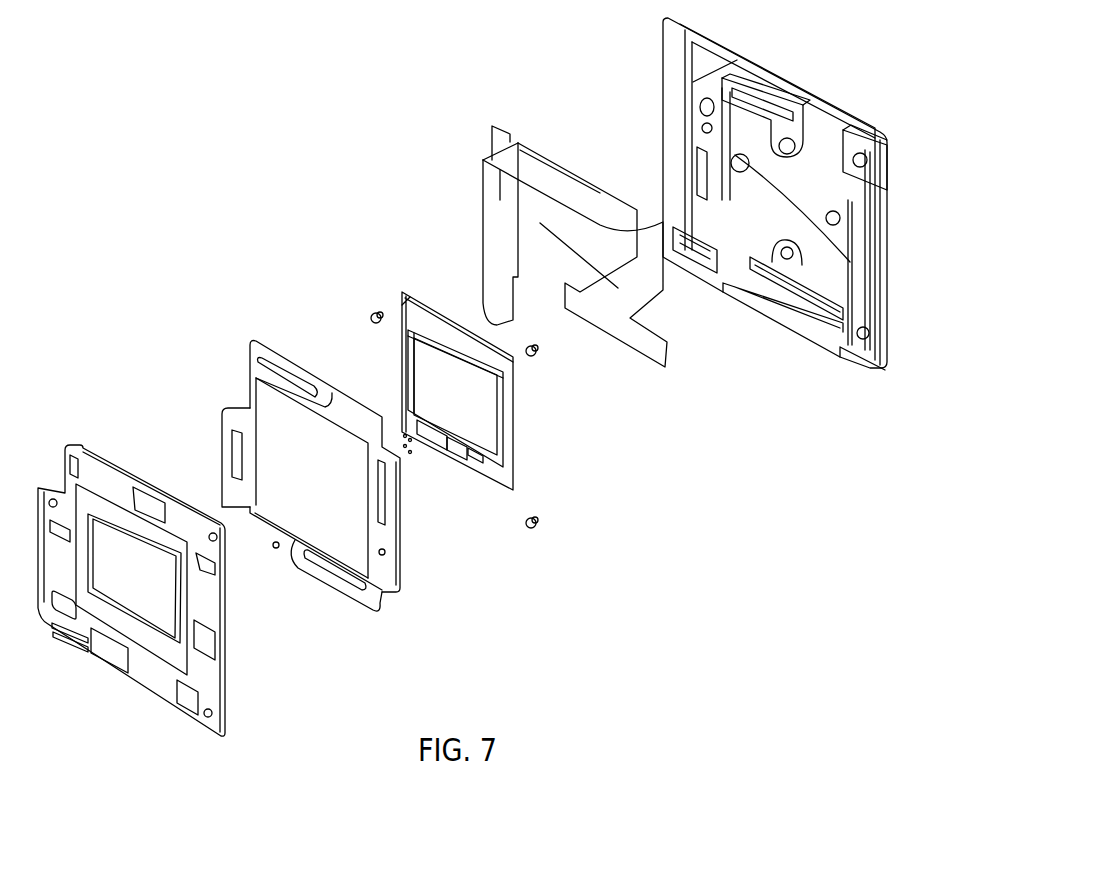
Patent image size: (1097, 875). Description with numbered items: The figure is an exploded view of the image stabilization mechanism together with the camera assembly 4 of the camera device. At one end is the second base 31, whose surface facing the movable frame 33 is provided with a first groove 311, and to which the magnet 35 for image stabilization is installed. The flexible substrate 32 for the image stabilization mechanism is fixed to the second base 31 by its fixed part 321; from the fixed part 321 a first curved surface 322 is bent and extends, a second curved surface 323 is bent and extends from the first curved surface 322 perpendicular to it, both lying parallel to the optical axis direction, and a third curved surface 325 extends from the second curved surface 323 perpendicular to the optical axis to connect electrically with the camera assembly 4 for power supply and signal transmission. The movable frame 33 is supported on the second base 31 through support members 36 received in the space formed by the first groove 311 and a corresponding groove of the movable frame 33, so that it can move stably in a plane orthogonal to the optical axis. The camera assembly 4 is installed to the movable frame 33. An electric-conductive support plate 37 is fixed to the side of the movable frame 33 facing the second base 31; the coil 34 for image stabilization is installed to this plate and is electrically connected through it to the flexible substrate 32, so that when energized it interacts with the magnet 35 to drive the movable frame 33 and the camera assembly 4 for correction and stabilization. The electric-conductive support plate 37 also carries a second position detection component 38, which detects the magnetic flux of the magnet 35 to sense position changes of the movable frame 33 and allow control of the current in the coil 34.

The second base 31 is at (712, 65).
The first groove 311 is at (871, 158).
The magnet for image stabilization 35 is at (685, 197).
The flexible substrate for the image stabilization mechanism 32 is at (436, 128).
The fixed part 321 is at (503, 140).
The first curved surface 322 is at (503, 188).
The second curved surface 323 is at (542, 182).
The third curved surface 325 is at (618, 288).
The camera assembly 4 is at (452, 337).
The support member 36 is at (372, 313).
The electric-conductive support plate 37 is at (243, 530).
The coil for image stabilization 34 is at (385, 520).
The second position detection component 38 is at (382, 553).
The movable frame 33 is at (148, 537).